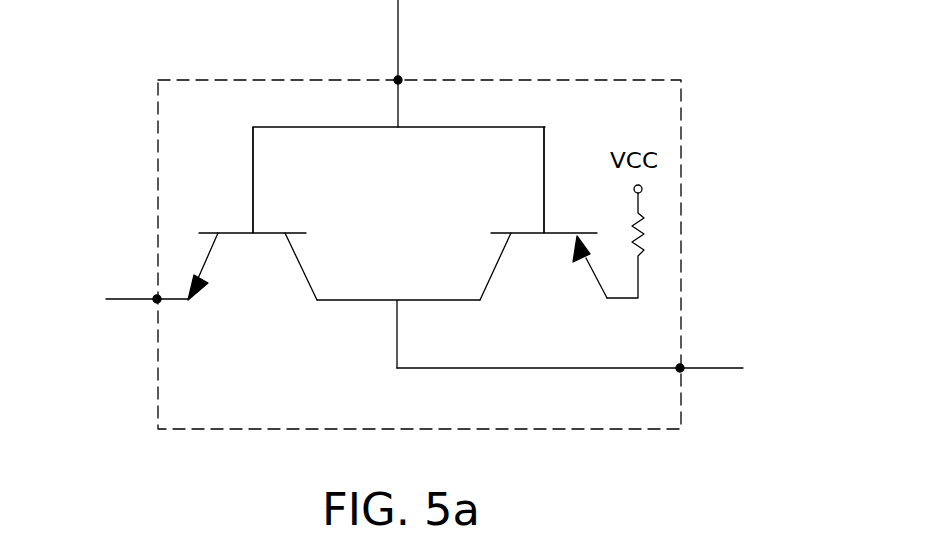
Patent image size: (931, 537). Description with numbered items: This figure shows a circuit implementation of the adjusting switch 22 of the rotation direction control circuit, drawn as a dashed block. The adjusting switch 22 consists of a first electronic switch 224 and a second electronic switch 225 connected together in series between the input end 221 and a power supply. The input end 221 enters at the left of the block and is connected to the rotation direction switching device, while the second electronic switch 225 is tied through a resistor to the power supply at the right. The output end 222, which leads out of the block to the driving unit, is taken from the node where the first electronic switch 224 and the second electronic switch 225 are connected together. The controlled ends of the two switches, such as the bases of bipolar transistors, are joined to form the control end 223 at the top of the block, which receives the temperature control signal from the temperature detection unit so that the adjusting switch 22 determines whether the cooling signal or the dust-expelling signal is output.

The adjusting switch 22 is at (558, 80).
The input end 221 is at (157, 299).
The output end 222 is at (680, 368).
The control end 223 is at (398, 80).
The first electronic switch 224 is at (253, 278).
The second electronic switch 225 is at (562, 282).